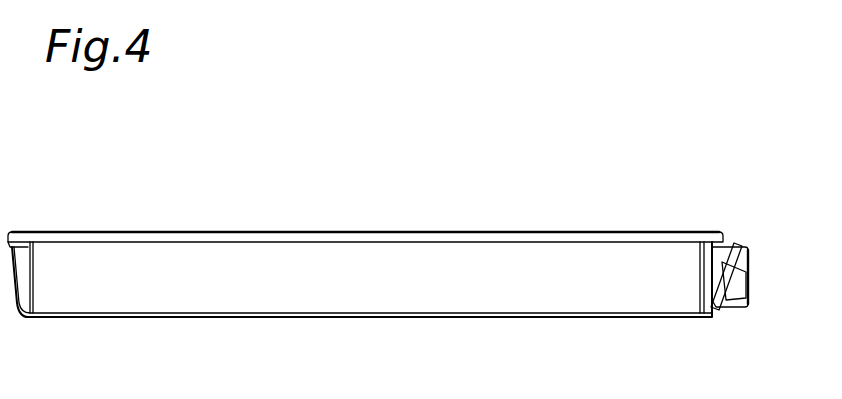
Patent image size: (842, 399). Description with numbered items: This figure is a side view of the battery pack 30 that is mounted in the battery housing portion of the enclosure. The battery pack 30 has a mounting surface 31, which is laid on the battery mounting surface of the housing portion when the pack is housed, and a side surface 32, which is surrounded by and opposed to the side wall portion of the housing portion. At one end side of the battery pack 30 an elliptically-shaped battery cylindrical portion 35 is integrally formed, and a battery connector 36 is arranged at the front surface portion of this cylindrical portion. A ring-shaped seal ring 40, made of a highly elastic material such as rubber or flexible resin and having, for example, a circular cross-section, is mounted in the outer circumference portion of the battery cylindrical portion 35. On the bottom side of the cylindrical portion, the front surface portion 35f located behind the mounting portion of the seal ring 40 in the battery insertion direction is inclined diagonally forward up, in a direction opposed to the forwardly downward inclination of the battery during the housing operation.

The battery pack 30 is at (365, 275).
The mounting surface 31 is at (430, 315).
The side surface 32 is at (165, 285).
The battery cylindrical portion 35 is at (741, 283).
The front surface portion 35f is at (738, 310).
The battery connector 36 is at (752, 263).
The seal ring 40 is at (715, 313).